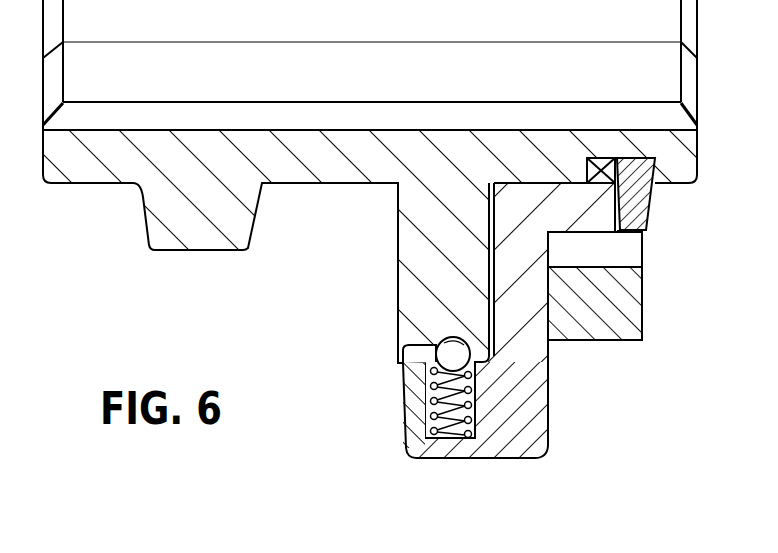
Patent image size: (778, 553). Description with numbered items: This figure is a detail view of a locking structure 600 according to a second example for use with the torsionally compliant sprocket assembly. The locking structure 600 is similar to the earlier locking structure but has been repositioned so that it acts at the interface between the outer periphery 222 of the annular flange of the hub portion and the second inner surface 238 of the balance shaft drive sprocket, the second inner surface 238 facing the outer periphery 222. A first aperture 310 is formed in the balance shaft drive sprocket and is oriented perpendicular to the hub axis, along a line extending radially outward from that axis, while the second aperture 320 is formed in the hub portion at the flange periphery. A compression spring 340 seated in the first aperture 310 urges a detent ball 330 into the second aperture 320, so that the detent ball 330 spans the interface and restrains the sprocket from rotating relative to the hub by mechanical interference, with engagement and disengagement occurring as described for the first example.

The locking structure 600 is at (394, 424).
The first aperture 310 is at (478, 423).
The second aperture 320 is at (442, 350).
The detent ball 330 is at (438, 353).
The compression spring 340 is at (468, 392).
The outer periphery of the annular flange 222 is at (487, 358).
The second inner surface 238 is at (482, 365).